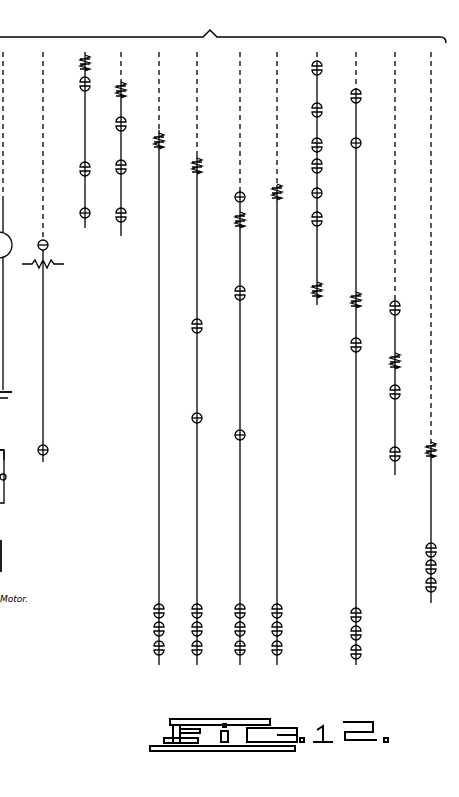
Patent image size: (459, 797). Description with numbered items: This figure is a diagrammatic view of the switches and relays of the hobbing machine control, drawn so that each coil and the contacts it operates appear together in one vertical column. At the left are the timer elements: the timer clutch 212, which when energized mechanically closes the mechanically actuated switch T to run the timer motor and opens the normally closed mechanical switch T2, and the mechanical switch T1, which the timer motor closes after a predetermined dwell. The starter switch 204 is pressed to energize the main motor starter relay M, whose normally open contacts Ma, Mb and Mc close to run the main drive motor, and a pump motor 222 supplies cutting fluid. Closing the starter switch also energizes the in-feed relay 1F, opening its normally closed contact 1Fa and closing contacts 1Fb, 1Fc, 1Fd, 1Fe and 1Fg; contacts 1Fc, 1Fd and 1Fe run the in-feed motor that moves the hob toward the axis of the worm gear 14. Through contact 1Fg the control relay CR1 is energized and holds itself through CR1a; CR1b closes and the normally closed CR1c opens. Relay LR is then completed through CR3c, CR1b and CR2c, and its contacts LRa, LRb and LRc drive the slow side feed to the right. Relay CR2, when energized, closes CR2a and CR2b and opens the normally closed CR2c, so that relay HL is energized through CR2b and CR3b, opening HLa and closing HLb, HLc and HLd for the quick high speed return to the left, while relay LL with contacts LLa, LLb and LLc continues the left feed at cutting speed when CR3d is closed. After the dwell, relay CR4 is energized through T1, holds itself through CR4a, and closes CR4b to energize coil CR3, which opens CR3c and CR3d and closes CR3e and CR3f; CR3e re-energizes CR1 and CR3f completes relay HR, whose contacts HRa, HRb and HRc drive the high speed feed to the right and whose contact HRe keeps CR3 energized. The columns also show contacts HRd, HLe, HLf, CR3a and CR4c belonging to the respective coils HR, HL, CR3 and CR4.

The worm gear 14 is at (6, 306).
The timer clutch 212 is at (43, 251).
The starter switch 204 is at (8, 443).
The pump motor 222 is at (2, 542).
The mechanically actuated switch T is at (48, 245).
The mechanical switch T1 is at (10, 400).
The mechanical switch T2 is at (48, 450).
The control relay CR1 is at (79, 134).
The contact CR1a is at (80, 84).
The contact CR1b is at (80, 169).
The contact CR1c is at (80, 219).
The control relay CR2 is at (117, 138).
The contact CR2a is at (116, 126).
The contact CR2b is at (116, 218).
The contact CR2c is at (116, 166).
The low speed right side feed relay LR is at (157, 353).
The contact LRa is at (153, 611).
The contact LRb is at (153, 629).
The contact LRc is at (153, 648).
The high speed right side feed relay HR is at (197, 353).
The contact HRa is at (202, 611).
The contact HRb is at (202, 629).
The contact HRc is at (202, 648).
The contact HRd is at (195, 420).
The contact HRe is at (194, 328).
The high speed left side feed relay HL is at (238, 353).
The contact HLa is at (237, 199).
The contact HLb is at (244, 612).
The contact HLc is at (250, 629).
The contact HLd is at (251, 651).
The contact HLe is at (237, 296).
The contact HLf is at (236, 437).
The low speed left side feed relay LL is at (275, 353).
The contact LLa is at (282, 611).
The contact LLb is at (282, 629).
The contact LLc is at (282, 648).
The control relay CR3 is at (315, 173).
The contact CR3a is at (314, 114).
The contact CR3b is at (314, 223).
The contact CR3c is at (314, 147).
The contact CR3d is at (314, 196).
The contact CR3e is at (314, 71).
The contact CR3f is at (314, 170).
The in-feed relay 1F is at (355, 353).
The contact 1Fa is at (351, 145).
The contact 1Fb is at (350, 349).
The contact 1Fc is at (361, 615).
The contact 1Fd is at (361, 633).
The contact 1Fe is at (361, 652).
The contact 1Fg is at (352, 100).
The control relay CR4 is at (392, 258).
The contact CR4a is at (392, 392).
The contact CR4b is at (391, 312).
The contact CR4c is at (392, 458).
The main motor starter relay M is at (431, 322).
The contact Ma is at (424, 545).
The contact Mb is at (424, 567).
The contact Mc is at (424, 585).